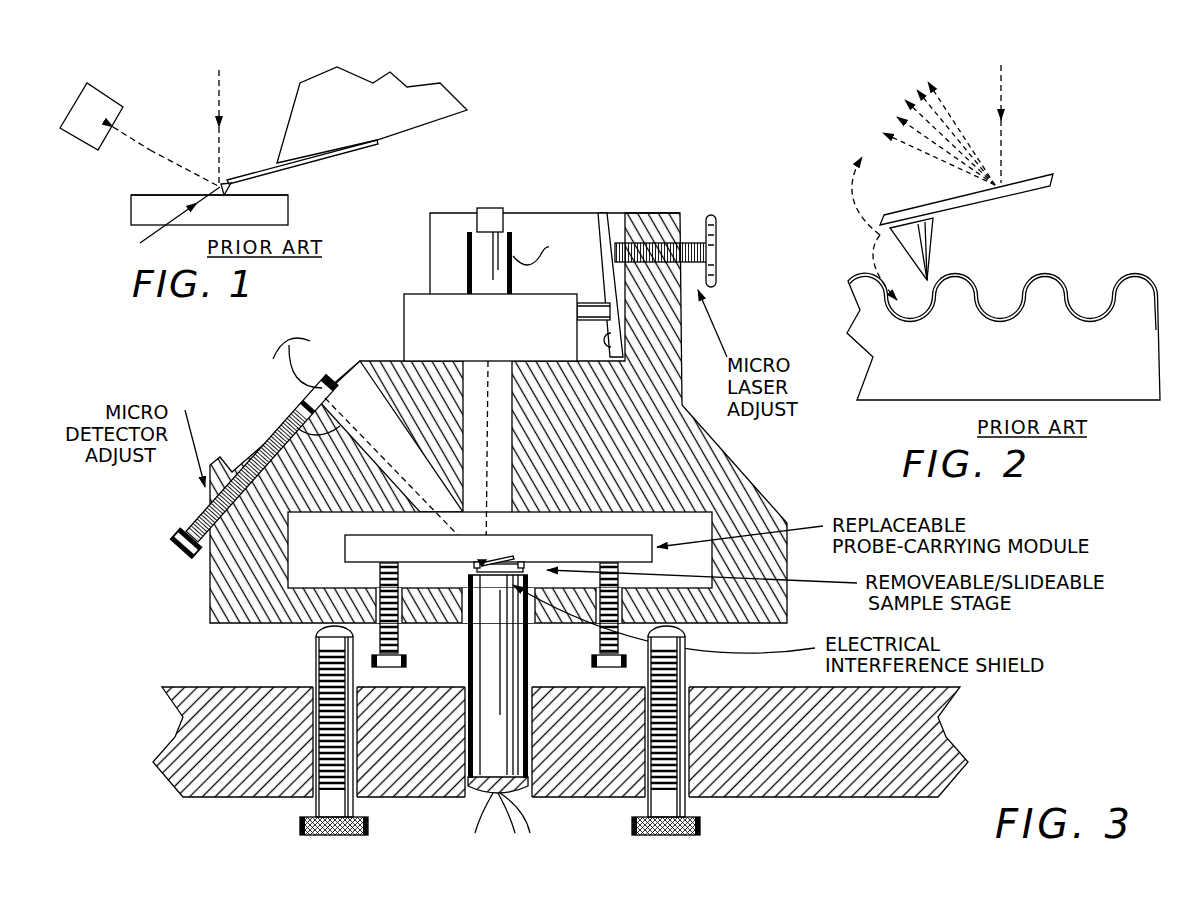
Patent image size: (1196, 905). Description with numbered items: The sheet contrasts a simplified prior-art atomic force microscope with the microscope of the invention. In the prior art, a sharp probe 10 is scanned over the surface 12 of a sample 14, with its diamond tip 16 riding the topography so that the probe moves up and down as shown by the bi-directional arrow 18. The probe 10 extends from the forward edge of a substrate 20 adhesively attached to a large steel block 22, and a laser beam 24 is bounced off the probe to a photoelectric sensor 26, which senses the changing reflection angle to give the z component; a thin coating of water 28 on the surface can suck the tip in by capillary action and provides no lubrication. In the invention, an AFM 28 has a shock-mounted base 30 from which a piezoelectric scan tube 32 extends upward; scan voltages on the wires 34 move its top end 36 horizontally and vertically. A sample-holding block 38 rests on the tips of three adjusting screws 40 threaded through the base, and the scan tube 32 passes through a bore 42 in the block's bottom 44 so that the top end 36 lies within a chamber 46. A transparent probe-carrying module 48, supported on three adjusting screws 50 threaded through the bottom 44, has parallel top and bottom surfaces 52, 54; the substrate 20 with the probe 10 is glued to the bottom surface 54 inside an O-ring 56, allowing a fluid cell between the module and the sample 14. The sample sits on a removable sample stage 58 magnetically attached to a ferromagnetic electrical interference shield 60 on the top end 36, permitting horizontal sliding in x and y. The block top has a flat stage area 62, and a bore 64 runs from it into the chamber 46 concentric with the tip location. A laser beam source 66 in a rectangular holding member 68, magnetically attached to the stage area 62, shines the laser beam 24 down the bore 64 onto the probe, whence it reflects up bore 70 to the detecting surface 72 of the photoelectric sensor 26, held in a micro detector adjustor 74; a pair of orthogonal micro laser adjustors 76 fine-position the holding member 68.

In FIG. 1, the probe 10 is at (227, 194).
In FIG. 2, the probe 10 is at (1007, 193).
In FIG. 1, the surface 12 is at (155, 194).
In FIG. 2, the surface 12 is at (1077, 260).
In FIG. 1, the sample 14 is at (282, 215).
In FIG. 2, the sample 14 is at (862, 298).
In FIG. 1, the tip 16 is at (167, 224).
In FIG. 2, the tip 16 is at (932, 250).
In FIG. 2, the bi-directional arrow 18 is at (862, 210).
In FIG. 1, the substrate 20 is at (360, 150).
In FIG. 3, the substrate 20 is at (493, 561).
In FIG. 1, the steel block 22 is at (337, 119).
In FIG. 1, the laser beam 24 is at (221, 112).
In FIG. 2, the laser beam 24 is at (1002, 93).
In FIG. 3, the laser beam 24 is at (463, 392).
In FIG. 1, the photoelectric sensor 26 is at (107, 103).
In FIG. 3, the photoelectric sensor 26 is at (327, 372).
In FIG. 2, the coating of water / AFM 28 is at (1124, 278).
In FIG. 3, the coating of water / AFM 28 is at (218, 385).
In FIG. 3, the base 30 is at (930, 745).
In FIG. 3, the piezoelectric scan tube 32 is at (478, 658).
In FIG. 3, the wires 34 is at (518, 812).
In FIG. 3, the top end 36 is at (487, 595).
In FIG. 3, the sample-holding block 38 is at (768, 508).
In FIG. 3, the adjusting screws 40 is at (327, 802).
In FIG. 3, the bore 42 is at (532, 615).
In FIG. 3, the bottom 44 is at (700, 613).
In FIG. 3, the chamber 46 is at (296, 545).
In FIG. 3, the probe-carrying module 48 is at (652, 541).
In FIG. 3, the adjusting screws 50 is at (380, 566).
In FIG. 3, the top surface 52 is at (532, 563).
In FIG. 3, the bottom surface 54 is at (453, 563).
In FIG. 3, the O-ring 56 is at (479, 562).
In FIG. 3, the sample stage 58 is at (537, 558).
In FIG. 3, the electrical interference shield 60 is at (497, 582).
In FIG. 3, the stage area 62 is at (394, 358).
In FIG. 3, the bore 64 is at (500, 372).
In FIG. 3, the laser beam source 66 is at (513, 238).
In FIG. 3, the holding member 68 is at (445, 292).
In FIG. 3, the bore 70 is at (287, 413).
In FIG. 3, the detecting surface 72 is at (340, 407).
In FIG. 3, the micro detector adjustor 74 is at (190, 505).
In FIG. 3, the micro laser adjustors 76 is at (690, 207).